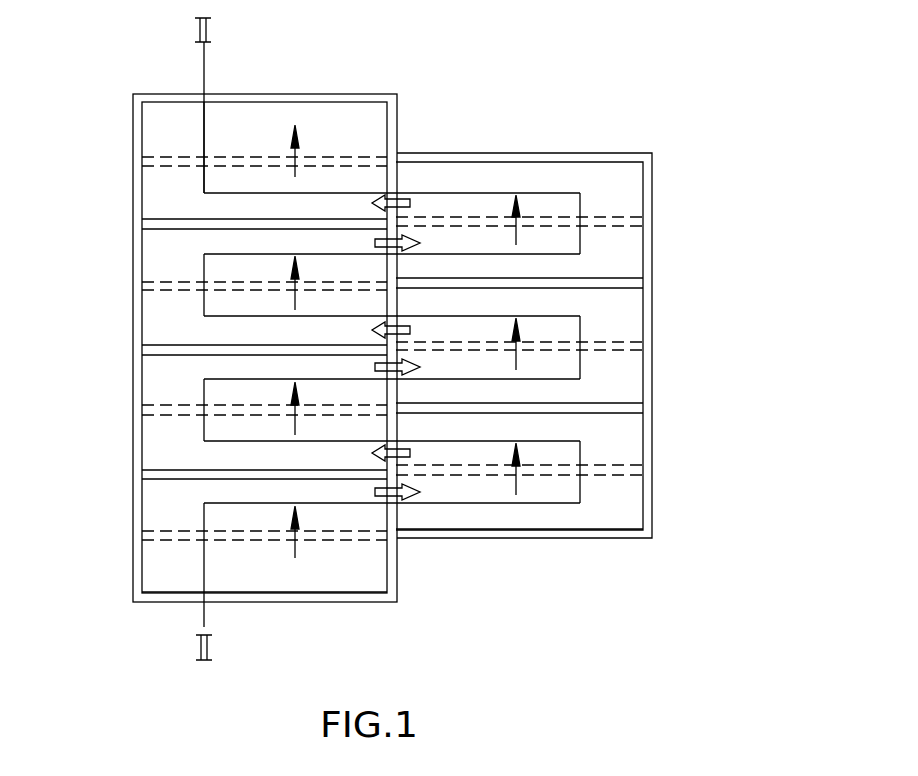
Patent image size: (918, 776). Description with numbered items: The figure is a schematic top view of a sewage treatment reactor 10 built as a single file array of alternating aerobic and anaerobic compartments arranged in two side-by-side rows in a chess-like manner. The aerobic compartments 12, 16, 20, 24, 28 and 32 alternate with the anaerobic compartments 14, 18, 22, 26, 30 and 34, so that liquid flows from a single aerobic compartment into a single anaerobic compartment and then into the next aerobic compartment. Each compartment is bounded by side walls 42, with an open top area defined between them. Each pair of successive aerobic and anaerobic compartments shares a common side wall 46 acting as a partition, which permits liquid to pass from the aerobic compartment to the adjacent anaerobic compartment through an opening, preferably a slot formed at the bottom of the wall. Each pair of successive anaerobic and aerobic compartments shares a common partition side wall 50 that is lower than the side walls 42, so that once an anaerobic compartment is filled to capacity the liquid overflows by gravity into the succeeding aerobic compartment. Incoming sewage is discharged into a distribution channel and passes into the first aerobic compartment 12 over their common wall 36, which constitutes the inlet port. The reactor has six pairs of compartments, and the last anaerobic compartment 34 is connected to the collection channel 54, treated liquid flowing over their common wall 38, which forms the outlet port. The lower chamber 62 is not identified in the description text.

The reactor 10 is at (669, 85).
The aerobic compartment 12 is at (197, 519).
The anaerobic compartment 14 is at (634, 519).
The aerobic compartment 16 is at (634, 456).
The anaerobic compartment 18 is at (194, 462).
The aerobic compartment 20 is at (191, 397).
The anaerobic compartment 22 is at (634, 396).
The aerobic compartment 24 is at (634, 329).
The anaerobic compartment 26 is at (191, 334).
The aerobic compartment 28 is at (191, 269).
The anaerobic compartment 30 is at (634, 266).
The aerobic compartment 32 is at (634, 201).
The anaerobic compartment 34 is at (190, 214).
The common wall 36 is at (190, 538).
The common wall 38 is at (173, 160).
The side walls 42 is at (140, 502).
The common side wall 46 is at (397, 512).
The common partition side wall 50 is at (615, 228).
The collection channel 54 is at (252, 120).
The lower chamber 62 is at (330, 573).